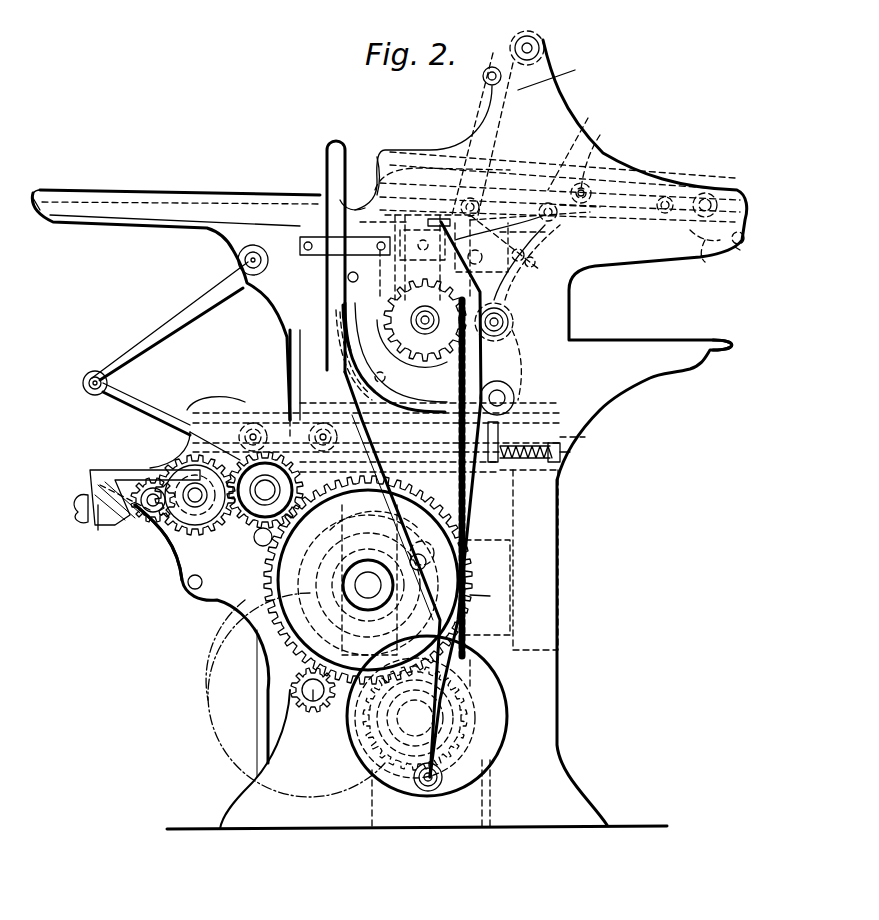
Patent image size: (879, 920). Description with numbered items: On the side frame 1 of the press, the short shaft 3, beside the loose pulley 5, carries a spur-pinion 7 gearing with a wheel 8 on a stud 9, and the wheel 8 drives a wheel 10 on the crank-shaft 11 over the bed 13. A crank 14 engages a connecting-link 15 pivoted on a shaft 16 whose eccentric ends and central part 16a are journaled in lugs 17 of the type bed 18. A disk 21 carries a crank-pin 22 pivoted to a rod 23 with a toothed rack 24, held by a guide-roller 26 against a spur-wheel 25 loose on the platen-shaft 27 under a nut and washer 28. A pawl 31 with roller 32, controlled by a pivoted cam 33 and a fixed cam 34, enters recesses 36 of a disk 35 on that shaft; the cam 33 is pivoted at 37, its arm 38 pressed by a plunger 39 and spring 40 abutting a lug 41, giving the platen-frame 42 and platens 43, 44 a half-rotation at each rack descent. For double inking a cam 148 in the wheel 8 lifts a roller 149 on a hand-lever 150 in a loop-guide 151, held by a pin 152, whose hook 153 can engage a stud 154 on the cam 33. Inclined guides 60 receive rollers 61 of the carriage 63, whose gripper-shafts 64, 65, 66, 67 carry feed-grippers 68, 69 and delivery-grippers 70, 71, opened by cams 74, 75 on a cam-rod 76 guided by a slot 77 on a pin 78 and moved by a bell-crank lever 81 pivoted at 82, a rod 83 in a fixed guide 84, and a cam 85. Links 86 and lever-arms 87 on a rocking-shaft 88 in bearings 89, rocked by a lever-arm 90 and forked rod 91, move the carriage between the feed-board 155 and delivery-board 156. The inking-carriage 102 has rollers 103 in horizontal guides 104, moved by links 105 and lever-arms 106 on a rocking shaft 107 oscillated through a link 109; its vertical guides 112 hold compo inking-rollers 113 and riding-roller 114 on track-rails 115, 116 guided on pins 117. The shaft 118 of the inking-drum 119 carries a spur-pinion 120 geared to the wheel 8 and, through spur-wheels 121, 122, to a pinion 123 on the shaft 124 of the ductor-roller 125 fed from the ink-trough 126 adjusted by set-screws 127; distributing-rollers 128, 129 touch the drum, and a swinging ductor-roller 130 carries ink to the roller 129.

The frame 1 is at (525, 200).
The pinion 3 is at (313, 690).
The wheel 5 is at (208, 690).
The shaft 7 is at (313, 705).
The main gear 8 is at (368, 580).
The shaft 9 is at (368, 585).
The wheel 10 is at (490, 722).
The disk 11 is at (440, 735).
The bracket 13 is at (490, 802).
The wheel 14 is at (352, 758).
The plate 15 is at (397, 638).
The pin 16 is at (415, 540).
The pin 16a is at (462, 545).
The roller 17 is at (440, 520).
The guide 18 is at (505, 495).
The gear 21 is at (425, 718).
The pivot 22 is at (420, 790).
The link 23 is at (485, 590).
The lever 24 is at (521, 262).
The gear 25 is at (421, 323).
The roller 26 is at (508, 322).
The shaft 27 is at (425, 312).
The housing 28 is at (412, 318).
The slide 31 is at (421, 240).
The guide 32 is at (385, 208).
The slot 33 is at (344, 335).
The rod 34 is at (366, 275).
The guide 35 is at (446, 304).
The rod 36 is at (450, 385).
The roller 37 is at (505, 397).
The block 38 is at (508, 442).
The spring 39 is at (530, 443).
The rod 40 is at (545, 462).
The nut 41 is at (565, 455).
The arm 42 is at (515, 360).
The bar 43 is at (454, 490).
The plate 44 is at (376, 437).
The link 60 is at (574, 146).
The pivot 61 is at (733, 186).
The pivot 63 is at (666, 197).
The pin 64 is at (564, 190).
The link 65 is at (570, 215).
The stop 66 is at (735, 252).
The pin 67 is at (742, 245).
The pivot 68 is at (540, 222).
The arm 69 is at (515, 231).
The latch 70 is at (700, 238).
The spring 71 is at (708, 258).
The rod 74 is at (355, 200).
The lever 75 is at (529, 242).
The arm 76 is at (390, 205).
The link 77 is at (353, 183).
The bracket 78 is at (383, 164).
The pin 81 is at (543, 269).
The pin 82 is at (525, 271).
The guide 83 is at (487, 588).
The rack 84 is at (480, 668).
The disk 85 is at (495, 705).
The bar 86 is at (522, 212).
The lever 87 is at (560, 137).
The pivot 88 is at (537, 45).
The bearing 89 is at (512, 42).
The pin 90 is at (483, 76).
The arm 91 is at (490, 96).
The plate 102 is at (293, 442).
The slot 103 is at (288, 430).
The plate 104 is at (585, 433).
The lever 105 is at (160, 418).
The link 106 is at (165, 328).
The pivot 107 is at (245, 259).
The frame wall 109 is at (285, 330).
The wall 112 is at (298, 352).
The pivot 113 is at (272, 423).
The pivot 114 is at (321, 423).
The plate 115 is at (421, 466).
The plate 116 is at (386, 452).
The plate 117 is at (385, 466).
The pin 118 is at (262, 546).
The pin 119 is at (224, 580).
The gear 120 is at (250, 510).
The gear 121 is at (178, 525).
The bracket 122 is at (180, 560).
The pinion 123 is at (150, 520).
The shaft 124 is at (112, 522).
The bar 125 is at (145, 487).
The spring 126 is at (110, 485).
The knob 127 is at (99, 526).
The cam 128 is at (345, 525).
The arm 129 is at (216, 398).
The hook 130 is at (186, 455).
The cam 148 is at (305, 585).
The cam 149 is at (368, 585).
The rod 150 is at (325, 155).
The bar 151 is at (318, 240).
The pin 152 is at (347, 277).
The slot 153 is at (350, 378).
The pin 154 is at (374, 377).
The arm 155 is at (248, 192).
The lug 156 is at (725, 338).